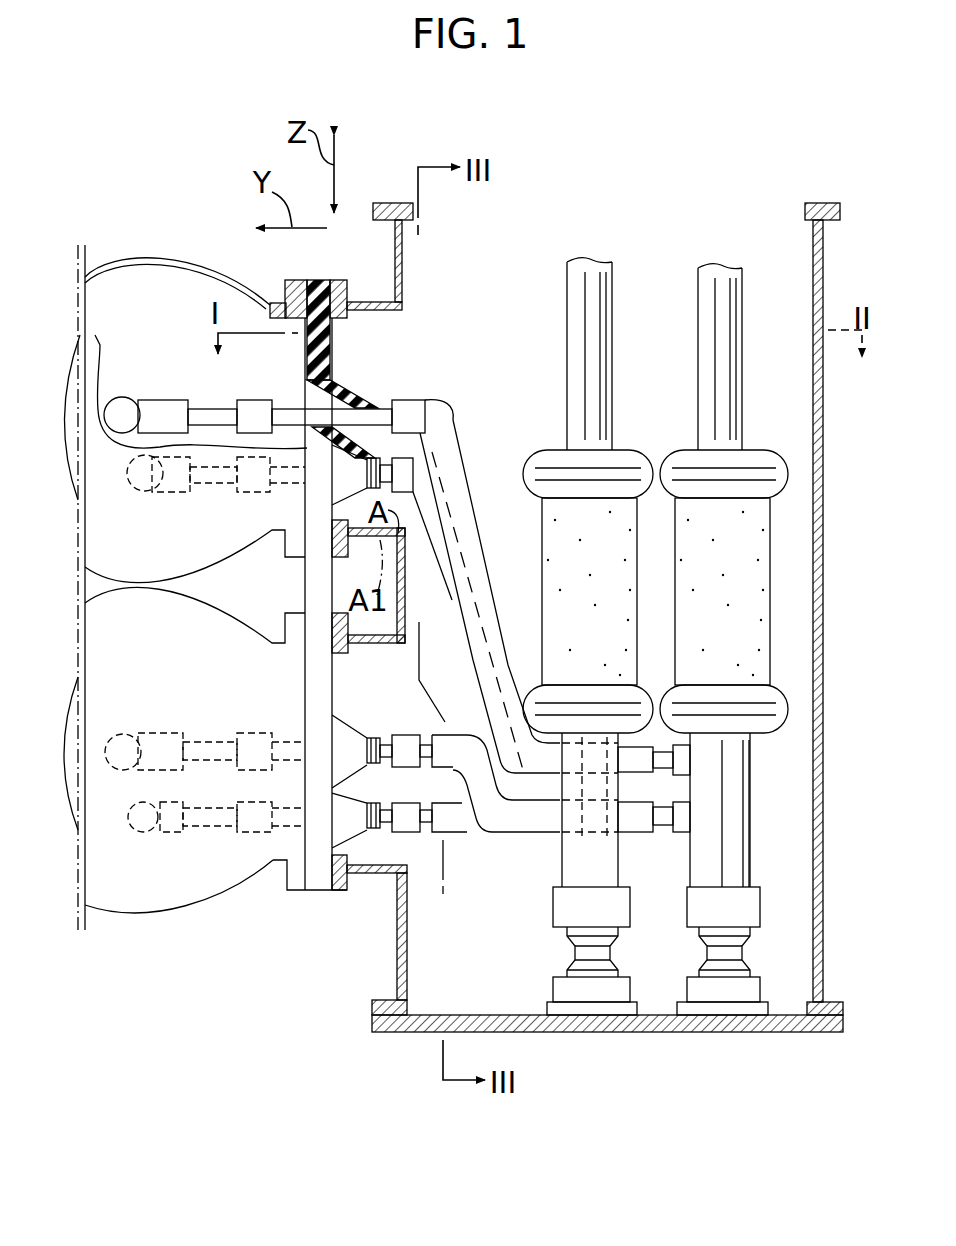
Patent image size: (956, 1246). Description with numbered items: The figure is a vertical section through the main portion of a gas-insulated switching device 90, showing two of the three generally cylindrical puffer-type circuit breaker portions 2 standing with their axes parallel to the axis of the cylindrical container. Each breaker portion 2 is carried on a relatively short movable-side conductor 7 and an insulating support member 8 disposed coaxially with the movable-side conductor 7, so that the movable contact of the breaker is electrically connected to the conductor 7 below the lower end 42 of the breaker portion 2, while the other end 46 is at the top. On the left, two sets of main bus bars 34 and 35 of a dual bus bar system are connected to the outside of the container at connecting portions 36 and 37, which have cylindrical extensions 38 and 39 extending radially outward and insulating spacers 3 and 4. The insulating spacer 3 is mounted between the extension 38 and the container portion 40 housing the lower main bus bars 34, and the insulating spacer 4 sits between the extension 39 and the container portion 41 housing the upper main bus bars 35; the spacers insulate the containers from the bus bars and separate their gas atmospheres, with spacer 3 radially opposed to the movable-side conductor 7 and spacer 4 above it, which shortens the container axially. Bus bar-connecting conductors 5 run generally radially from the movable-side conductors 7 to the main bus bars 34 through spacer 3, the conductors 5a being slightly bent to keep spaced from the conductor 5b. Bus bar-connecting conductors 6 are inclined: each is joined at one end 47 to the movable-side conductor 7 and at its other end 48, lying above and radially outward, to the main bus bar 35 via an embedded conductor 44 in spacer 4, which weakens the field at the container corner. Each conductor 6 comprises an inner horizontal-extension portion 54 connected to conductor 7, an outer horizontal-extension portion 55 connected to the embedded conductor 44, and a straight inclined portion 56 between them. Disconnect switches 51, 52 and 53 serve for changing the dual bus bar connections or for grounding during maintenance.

The circuit breaker portion 2 is at (542, 585).
The insulating spacer 3 is at (320, 665).
The insulating spacer 4 is at (326, 344).
The bus bar-connecting conductor 5 is at (404, 738).
The bus bar-connecting conductor 5a is at (470, 737).
The bus bar-connecting conductor 5b is at (460, 822).
The bus bar-connecting conductor 6 is at (470, 662).
The movable-side conductor 7 is at (755, 842).
The insulating support member 8 is at (755, 955).
The main bus bar 34 is at (140, 735).
The main bus bar 35 is at (135, 398).
The connecting portion 36 is at (266, 897).
The connecting portion 37 is at (264, 278).
The cylindrical extension 38 is at (366, 876).
The cylindrical extension 39 is at (360, 585).
The container portion 40 is at (133, 917).
The container portion 41 is at (128, 255).
The one end of breaker portion 42 is at (733, 740).
The embedded conductor 44 is at (347, 412).
The other end of breaker portion 46 is at (600, 432).
The one end of bus bar-connecting conductor 47 is at (667, 760).
The other end of bus bar-connecting conductor 48 is at (418, 400).
The disconnect switch 51 is at (402, 824).
The disconnect switch 52 is at (248, 733).
The disconnect switch 53 is at (262, 398).
The inner horizontal-extension portion 54 is at (643, 770).
The outer horizontal-extension portion 55 is at (445, 425).
The straight inclined portion 56 is at (458, 476).
The gas-insulated switching device 90 is at (683, 1044).